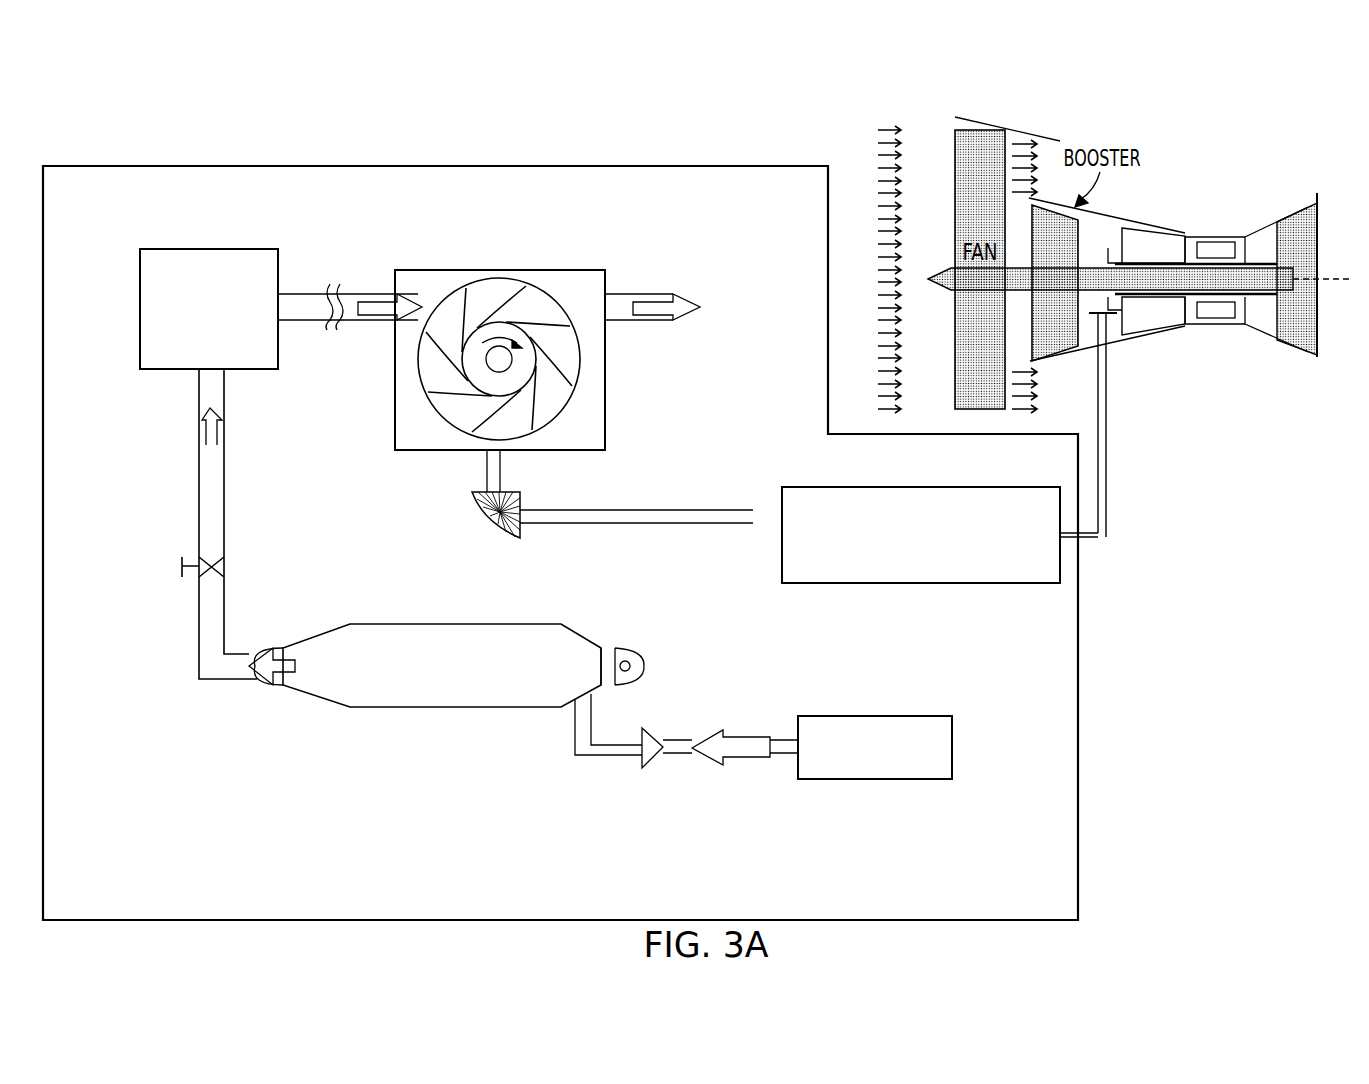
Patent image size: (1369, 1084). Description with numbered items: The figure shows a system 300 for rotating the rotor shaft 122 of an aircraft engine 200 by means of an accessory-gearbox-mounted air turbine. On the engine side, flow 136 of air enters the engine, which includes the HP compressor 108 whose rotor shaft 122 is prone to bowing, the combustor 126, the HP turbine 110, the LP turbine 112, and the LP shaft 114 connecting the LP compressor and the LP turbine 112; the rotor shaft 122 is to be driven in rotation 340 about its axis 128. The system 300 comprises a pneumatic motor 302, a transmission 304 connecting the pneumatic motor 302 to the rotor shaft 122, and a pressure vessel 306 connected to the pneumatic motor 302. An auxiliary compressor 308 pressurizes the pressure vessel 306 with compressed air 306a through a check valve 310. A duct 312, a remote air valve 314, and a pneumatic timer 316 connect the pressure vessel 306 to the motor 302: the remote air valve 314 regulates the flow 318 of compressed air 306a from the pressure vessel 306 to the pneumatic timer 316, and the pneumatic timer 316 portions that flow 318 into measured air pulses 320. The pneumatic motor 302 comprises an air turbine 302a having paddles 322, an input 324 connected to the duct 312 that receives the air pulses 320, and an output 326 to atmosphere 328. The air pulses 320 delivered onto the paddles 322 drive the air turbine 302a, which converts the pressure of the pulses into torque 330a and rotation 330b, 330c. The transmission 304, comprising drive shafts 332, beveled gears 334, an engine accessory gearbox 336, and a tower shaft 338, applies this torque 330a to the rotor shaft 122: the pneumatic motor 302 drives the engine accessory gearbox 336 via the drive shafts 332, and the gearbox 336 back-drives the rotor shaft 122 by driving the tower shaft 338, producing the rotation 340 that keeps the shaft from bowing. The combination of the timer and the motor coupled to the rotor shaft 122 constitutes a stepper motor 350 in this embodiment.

The system for rotating a rotor shaft 300 is at (118, 157).
The stepper motor 350 is at (414, 207).
The flow of air into the engine 136 is at (880, 126).
The gas turbine engine 200 is at (1095, 126).
The HP compressor 108 is at (1172, 215).
The rotor shaft 122 is at (1272, 268).
The HP turbine 110 is at (1273, 222).
The LP shaft 114 is at (1280, 285).
The rotation of the rotor shaft 340 is at (1333, 300).
The axis AA' 128 is at (1310, 295).
The LP turbine 112 is at (1297, 345).
The combustor 126 is at (1220, 337).
The tower shaft 338 is at (1122, 381).
The transmission 304 is at (1128, 504).
The pneumatic timer 316 is at (139, 331).
The duct 312 is at (205, 389).
The flow of compressed air 318 is at (216, 437).
The remote air valve 314 is at (182, 566).
The auxiliary compressor 308 is at (867, 779).
The air pulses 320 is at (350, 305).
The input 324 is at (365, 318).
The pneumatic motor 302 is at (630, 247).
The air turbine 302a is at (548, 270).
The paddles 322 is at (560, 405).
The torque 330a is at (505, 320).
The rotation 330b is at (494, 332).
The rotation 330c is at (727, 557).
The output 326 is at (686, 322).
The atmosphere 328 is at (725, 296).
The drive shafts 332 is at (628, 526).
The beveled gears 334 is at (507, 538).
The engine accessory gearbox 336 is at (845, 583).
The pressure vessel 306 is at (401, 709).
The compressed air 306a is at (536, 644).
The check valve 310 is at (650, 762).